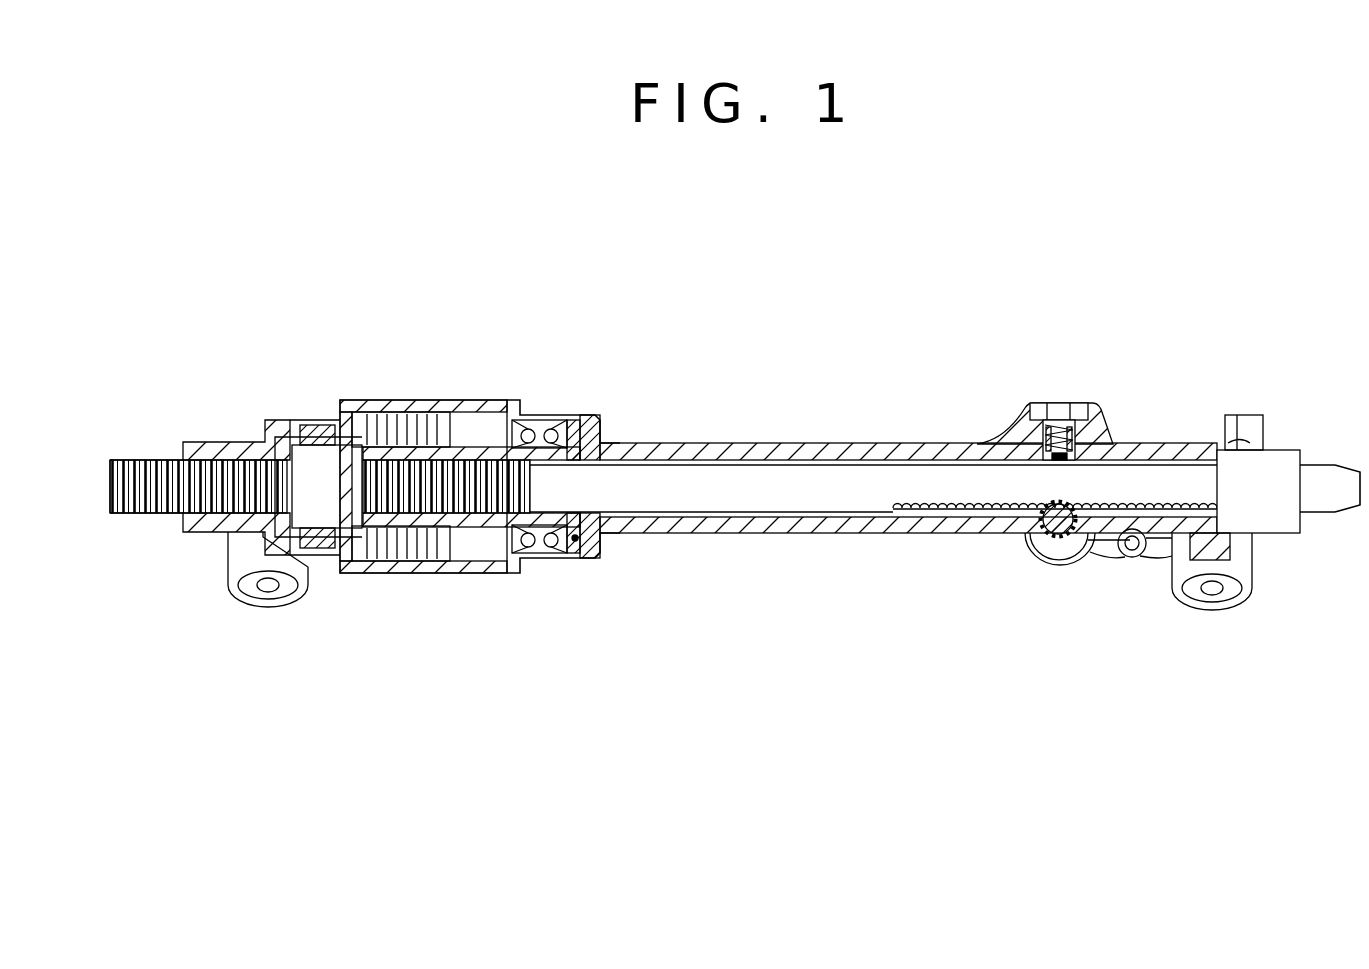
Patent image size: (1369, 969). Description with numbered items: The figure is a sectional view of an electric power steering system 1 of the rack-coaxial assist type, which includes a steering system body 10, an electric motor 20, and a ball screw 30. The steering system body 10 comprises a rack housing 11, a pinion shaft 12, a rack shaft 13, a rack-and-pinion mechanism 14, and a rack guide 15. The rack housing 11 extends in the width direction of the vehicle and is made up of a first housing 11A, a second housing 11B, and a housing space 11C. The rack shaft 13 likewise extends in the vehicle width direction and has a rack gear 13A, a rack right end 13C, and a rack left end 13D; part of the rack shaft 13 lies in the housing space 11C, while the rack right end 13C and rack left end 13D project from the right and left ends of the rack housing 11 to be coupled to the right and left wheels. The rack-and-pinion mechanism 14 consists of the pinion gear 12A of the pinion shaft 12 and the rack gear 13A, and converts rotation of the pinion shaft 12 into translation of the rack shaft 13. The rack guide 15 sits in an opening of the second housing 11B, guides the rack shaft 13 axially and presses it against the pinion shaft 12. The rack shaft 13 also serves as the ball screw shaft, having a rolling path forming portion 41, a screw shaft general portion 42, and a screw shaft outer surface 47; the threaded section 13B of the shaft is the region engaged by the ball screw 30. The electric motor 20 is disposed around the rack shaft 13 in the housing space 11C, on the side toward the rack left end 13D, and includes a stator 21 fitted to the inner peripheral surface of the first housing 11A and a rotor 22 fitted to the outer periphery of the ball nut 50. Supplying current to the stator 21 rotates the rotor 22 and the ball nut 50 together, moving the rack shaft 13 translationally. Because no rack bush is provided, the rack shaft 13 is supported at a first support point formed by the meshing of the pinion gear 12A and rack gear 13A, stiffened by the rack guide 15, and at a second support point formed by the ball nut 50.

The electric power steering system 1 is at (725, 421).
The steering system body 10 is at (725, 470).
The rack housing 11 is at (541, 443).
The first housing 11A is at (500, 400).
The second housing 11B is at (556, 412).
The housing space 11C is at (575, 541).
The pinion shaft 12 is at (1065, 542).
The pinion gear 12A is at (1040, 557).
The rack shaft 13 is at (725, 504).
The rack gear 13A is at (918, 523).
The ball screw portion (44) 13B is at (402, 462).
The rack right end 13C is at (1345, 515).
The rack left end 13D is at (111, 514).
The rack-and-pinion mechanism 14 is at (1044, 562).
The rack guide 15 is at (1086, 403).
The electric motor 20 is at (460, 531).
The stator 21 is at (445, 568).
The rotor 22 is at (493, 546).
The ball screw 30 is at (222, 412).
The rolling path forming portion 41 is at (158, 458).
The screw shaft general portion 42 is at (848, 470).
The screw shaft outer surface 47 is at (918, 455).
The ball nut 50 is at (313, 455).